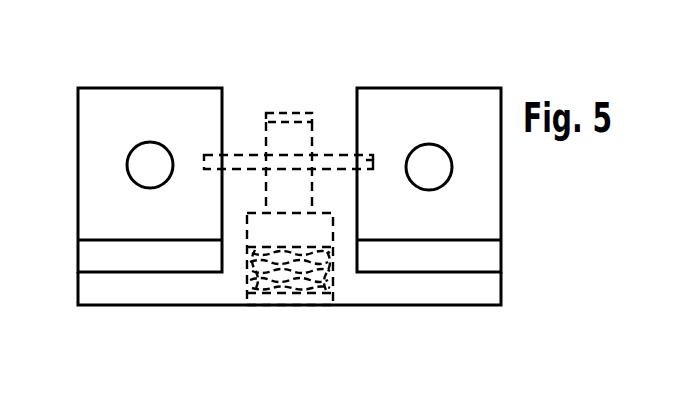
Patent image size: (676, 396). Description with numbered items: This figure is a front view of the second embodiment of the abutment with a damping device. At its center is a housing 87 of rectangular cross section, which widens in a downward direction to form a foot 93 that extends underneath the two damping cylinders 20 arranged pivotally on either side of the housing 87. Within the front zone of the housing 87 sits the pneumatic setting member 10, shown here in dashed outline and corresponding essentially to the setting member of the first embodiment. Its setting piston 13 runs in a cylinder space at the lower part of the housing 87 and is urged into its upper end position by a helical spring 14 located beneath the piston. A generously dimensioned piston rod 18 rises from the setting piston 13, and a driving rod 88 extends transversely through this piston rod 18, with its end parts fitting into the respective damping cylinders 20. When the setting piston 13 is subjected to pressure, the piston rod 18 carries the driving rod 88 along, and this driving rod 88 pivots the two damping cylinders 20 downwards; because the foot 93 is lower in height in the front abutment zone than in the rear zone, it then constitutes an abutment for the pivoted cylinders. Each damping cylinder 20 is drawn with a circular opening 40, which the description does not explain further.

The pneumatic setting member 10 is at (273, 306).
The setting piston 13 is at (325, 227).
The helical spring 14 is at (295, 280).
The piston rod 18 is at (315, 140).
The damping cylinder 20 is at (120, 98).
The mounting hole 40 is at (140, 164).
The housing 87 is at (245, 98).
The driving rod 88 is at (373, 160).
The foot 93 is at (485, 288).